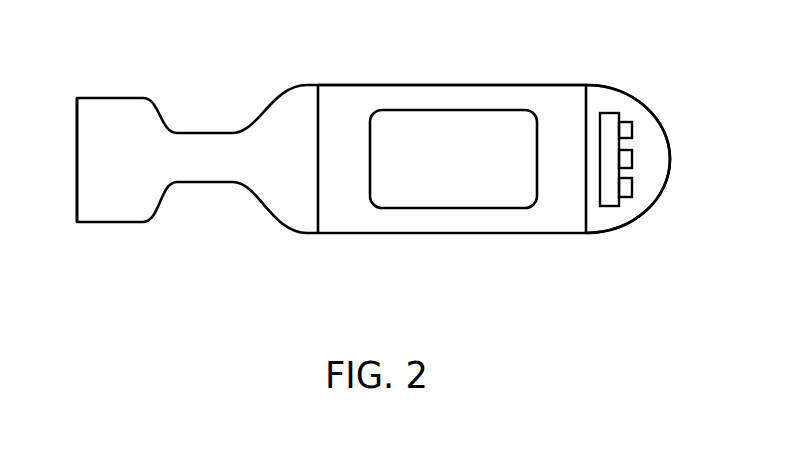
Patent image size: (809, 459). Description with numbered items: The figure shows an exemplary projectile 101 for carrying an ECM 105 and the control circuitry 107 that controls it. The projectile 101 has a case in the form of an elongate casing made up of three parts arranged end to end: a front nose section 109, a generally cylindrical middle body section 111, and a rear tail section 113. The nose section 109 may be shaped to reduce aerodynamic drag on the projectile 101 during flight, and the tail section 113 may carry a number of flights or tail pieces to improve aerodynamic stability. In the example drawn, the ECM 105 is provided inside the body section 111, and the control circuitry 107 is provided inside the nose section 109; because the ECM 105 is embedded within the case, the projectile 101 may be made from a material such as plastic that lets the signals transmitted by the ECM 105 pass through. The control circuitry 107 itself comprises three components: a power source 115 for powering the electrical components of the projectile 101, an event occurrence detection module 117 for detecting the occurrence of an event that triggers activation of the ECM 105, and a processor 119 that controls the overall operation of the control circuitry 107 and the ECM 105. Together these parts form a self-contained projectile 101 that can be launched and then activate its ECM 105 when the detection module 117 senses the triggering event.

The projectile 101 is at (467, 86).
The ECM 105 is at (433, 207).
The control circuitry 107 is at (610, 113).
The front nose section 109 is at (661, 200).
The middle body section 111 is at (380, 85).
The rear tail section 113 is at (140, 98).
The power source 115 is at (632, 130).
The event occurrence detection module 117 is at (632, 160).
The processor 119 is at (632, 187).